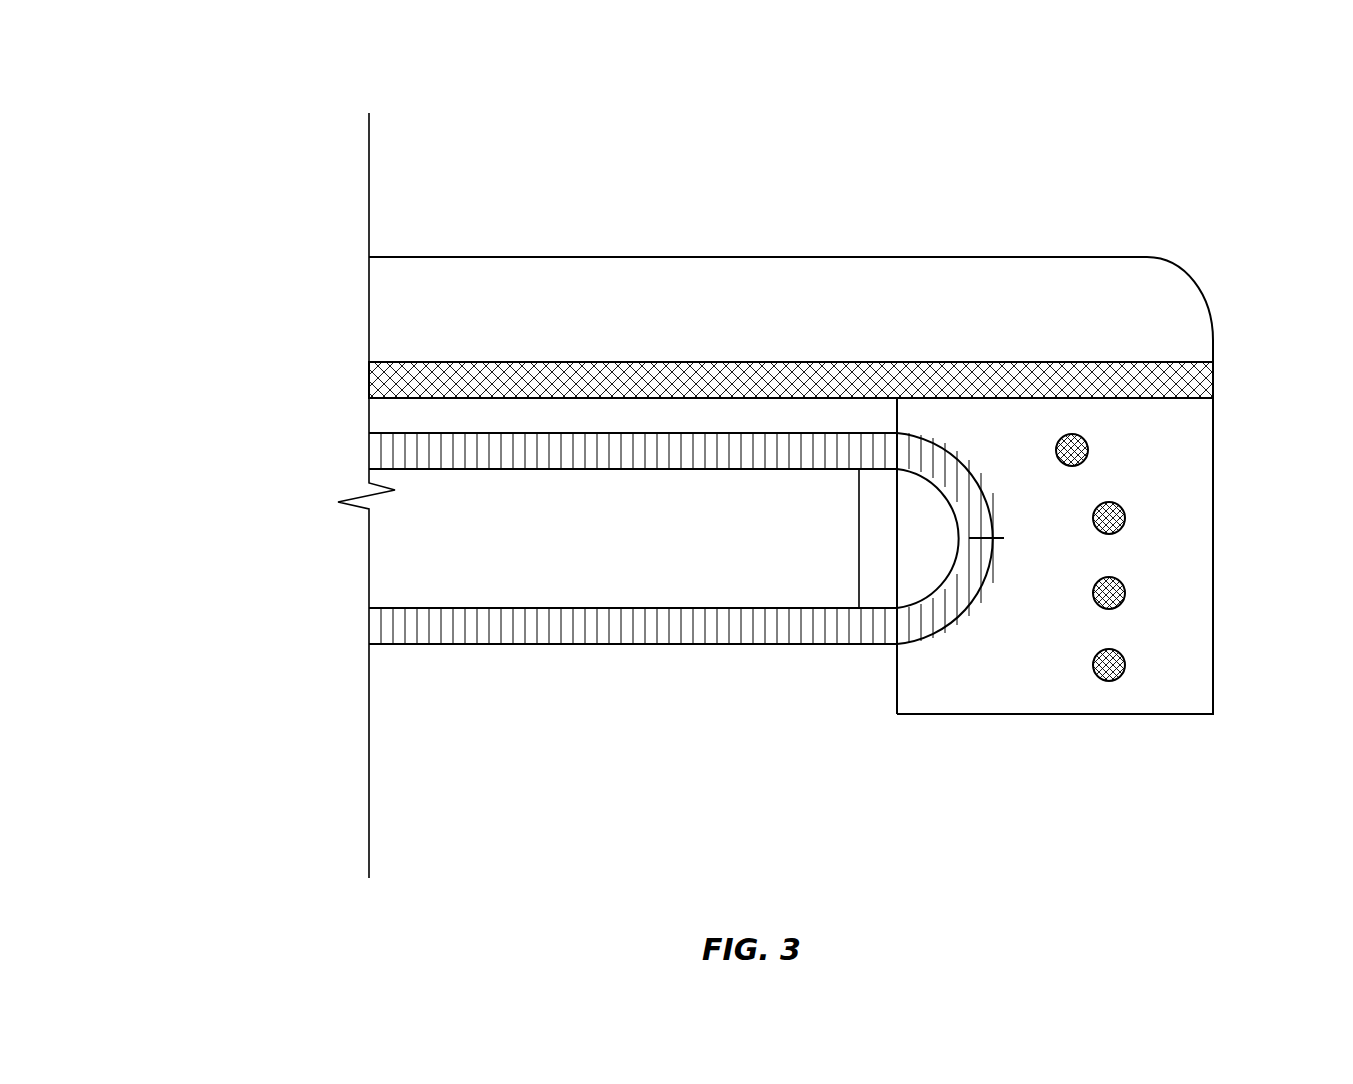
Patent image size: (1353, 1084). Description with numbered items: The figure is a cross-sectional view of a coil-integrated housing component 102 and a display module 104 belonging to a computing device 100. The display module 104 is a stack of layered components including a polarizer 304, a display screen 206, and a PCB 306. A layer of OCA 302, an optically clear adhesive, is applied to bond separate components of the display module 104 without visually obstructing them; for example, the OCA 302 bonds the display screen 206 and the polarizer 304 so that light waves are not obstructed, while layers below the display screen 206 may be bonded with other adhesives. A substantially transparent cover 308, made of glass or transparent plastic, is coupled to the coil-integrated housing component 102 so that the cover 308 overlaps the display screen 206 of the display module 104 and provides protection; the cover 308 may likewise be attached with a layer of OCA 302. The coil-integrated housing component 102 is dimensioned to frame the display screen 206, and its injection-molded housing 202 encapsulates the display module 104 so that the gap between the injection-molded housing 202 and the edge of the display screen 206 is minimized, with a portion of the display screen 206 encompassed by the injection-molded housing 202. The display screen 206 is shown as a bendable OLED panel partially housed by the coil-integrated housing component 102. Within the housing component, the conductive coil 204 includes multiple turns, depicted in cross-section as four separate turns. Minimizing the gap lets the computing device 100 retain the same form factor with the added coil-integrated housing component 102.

The computing device 100 is at (155, 128).
The coil-integrated housing component 102 is at (1213, 745).
The display module 104 is at (220, 362).
The injection-molded housing 202 is at (897, 682).
The conductive coil 204 is at (1088, 450).
The display screen 206 is at (663, 635).
The OCA 302 is at (1213, 377).
The polarizer 304 is at (369, 414).
The PCB 306 is at (369, 558).
The cover 308 is at (953, 257).